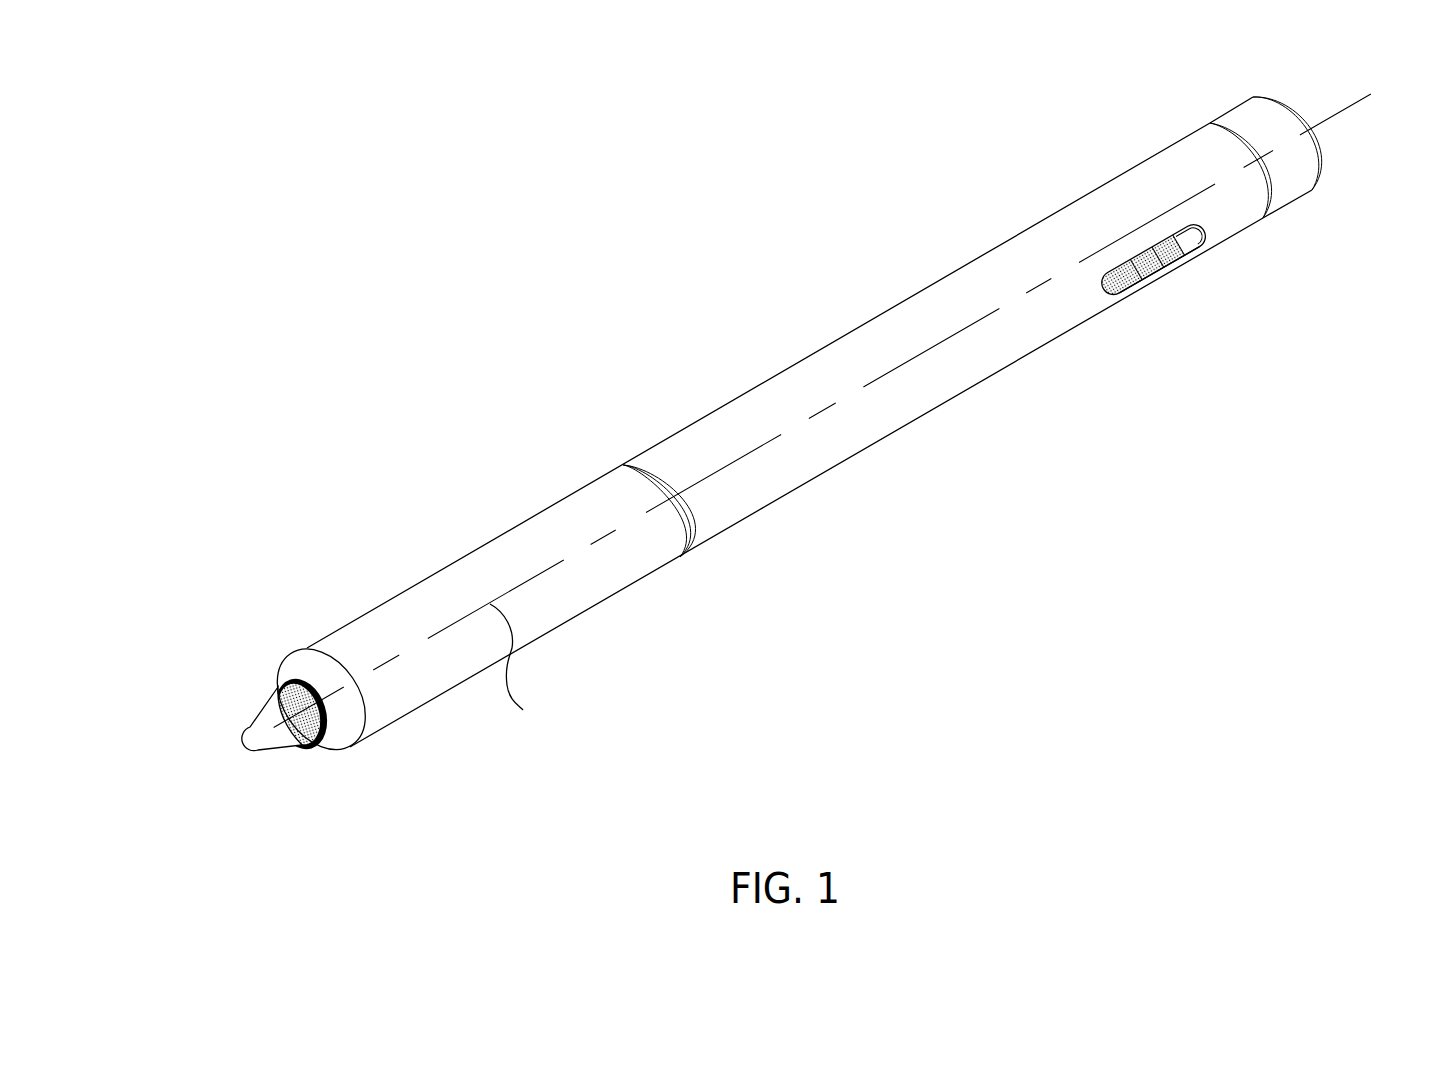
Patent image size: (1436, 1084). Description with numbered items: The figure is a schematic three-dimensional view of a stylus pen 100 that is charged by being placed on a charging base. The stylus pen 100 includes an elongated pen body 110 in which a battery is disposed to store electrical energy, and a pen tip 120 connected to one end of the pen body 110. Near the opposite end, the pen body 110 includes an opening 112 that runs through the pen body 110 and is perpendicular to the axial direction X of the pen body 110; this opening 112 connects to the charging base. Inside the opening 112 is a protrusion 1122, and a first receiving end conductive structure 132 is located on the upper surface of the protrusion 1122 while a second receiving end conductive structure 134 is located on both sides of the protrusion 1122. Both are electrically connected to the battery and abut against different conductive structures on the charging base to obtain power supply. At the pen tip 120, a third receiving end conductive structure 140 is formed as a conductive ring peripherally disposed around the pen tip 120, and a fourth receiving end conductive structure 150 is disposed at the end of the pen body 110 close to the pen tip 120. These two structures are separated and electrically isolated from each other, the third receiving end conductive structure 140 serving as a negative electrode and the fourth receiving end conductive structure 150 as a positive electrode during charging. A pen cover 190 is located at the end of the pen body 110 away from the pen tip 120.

The stylus pen 100 is at (784, 457).
The pen body 110 is at (817, 348).
The opening 112 is at (1152, 306).
The protrusion 1122 is at (1163, 278).
The pen tip 120 is at (255, 713).
The first receiving end conductive structure 132 is at (1132, 258).
The second receiving end conductive structure 134 is at (1153, 252).
The third receiving end conductive structure 140 is at (306, 748).
The fourth receiving end conductive structure 150 is at (277, 690).
The pen cover 190 is at (1325, 158).